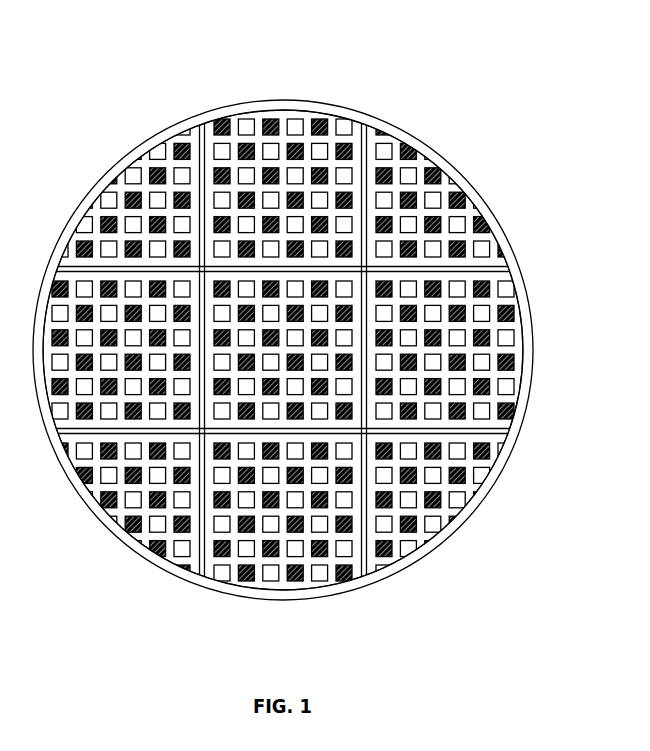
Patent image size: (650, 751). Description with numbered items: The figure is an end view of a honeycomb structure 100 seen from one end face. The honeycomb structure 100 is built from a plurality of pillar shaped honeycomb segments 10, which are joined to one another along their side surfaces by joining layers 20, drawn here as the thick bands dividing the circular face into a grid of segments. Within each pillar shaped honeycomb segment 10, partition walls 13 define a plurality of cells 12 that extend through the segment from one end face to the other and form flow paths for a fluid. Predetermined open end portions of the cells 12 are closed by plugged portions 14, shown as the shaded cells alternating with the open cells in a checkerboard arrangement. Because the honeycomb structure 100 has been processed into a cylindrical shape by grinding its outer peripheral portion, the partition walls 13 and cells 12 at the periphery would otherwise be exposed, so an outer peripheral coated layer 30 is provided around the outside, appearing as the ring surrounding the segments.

The pillar shaped honeycomb segment 10 is at (285, 303).
The cell 12 is at (110, 198).
The partition wall 13 is at (172, 150).
The plugged portion 14 is at (153, 167).
The joining layer 20 is at (364, 128).
The outer peripheral coated layer 30 is at (438, 160).
The honeycomb structure 100 is at (285, 331).